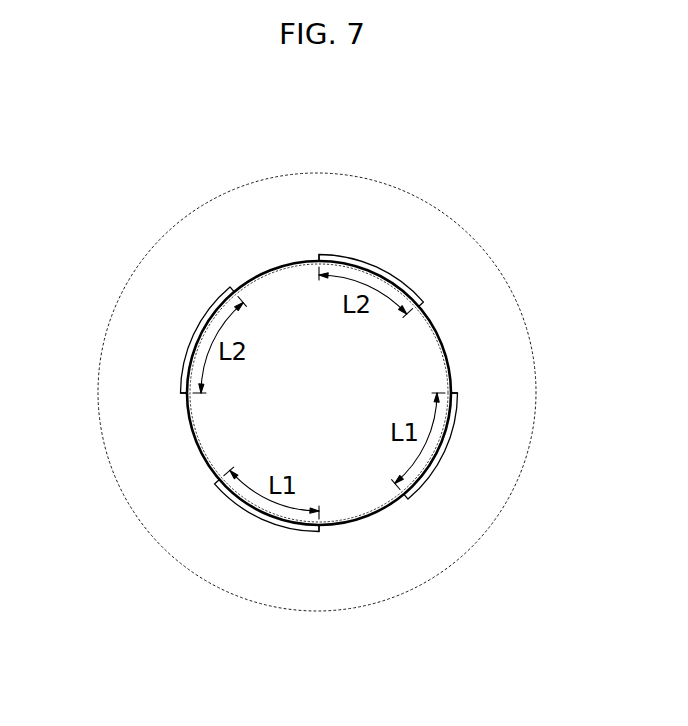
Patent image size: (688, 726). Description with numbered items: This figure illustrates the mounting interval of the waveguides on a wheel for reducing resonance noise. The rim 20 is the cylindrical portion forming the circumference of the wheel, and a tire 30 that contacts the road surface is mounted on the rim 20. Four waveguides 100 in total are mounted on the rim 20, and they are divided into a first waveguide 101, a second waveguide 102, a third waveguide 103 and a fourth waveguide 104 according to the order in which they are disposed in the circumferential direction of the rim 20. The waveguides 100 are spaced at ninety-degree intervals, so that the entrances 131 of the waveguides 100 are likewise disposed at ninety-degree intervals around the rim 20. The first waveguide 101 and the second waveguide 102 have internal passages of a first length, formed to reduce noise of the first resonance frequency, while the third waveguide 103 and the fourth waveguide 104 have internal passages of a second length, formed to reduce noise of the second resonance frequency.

The rim 20 is at (440, 340).
The tire 30 is at (468, 232).
The waveguides 100 is at (311, 374).
The first waveguide 101 is at (247, 512).
The second waveguide 102 is at (441, 457).
The third waveguide 103 is at (362, 260).
The fourth waveguide 104 is at (197, 333).
The entrances 131 is at (318, 257).